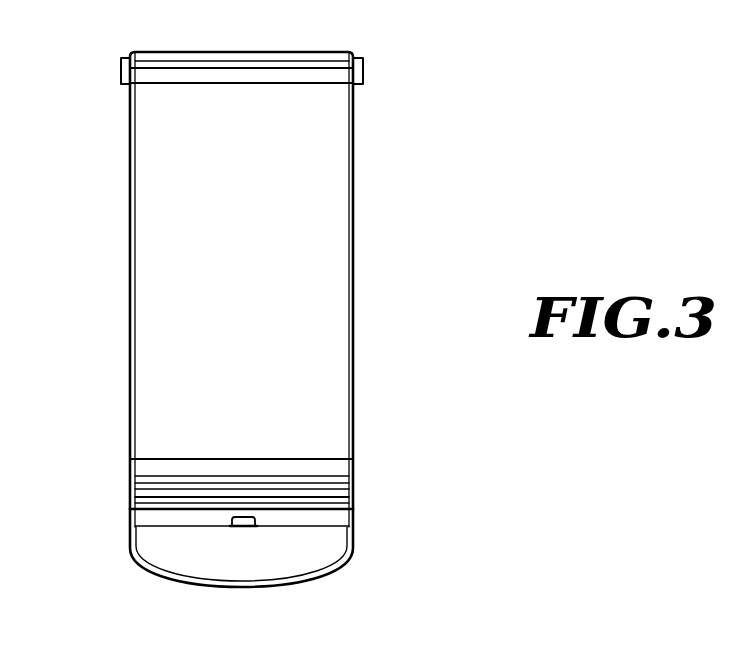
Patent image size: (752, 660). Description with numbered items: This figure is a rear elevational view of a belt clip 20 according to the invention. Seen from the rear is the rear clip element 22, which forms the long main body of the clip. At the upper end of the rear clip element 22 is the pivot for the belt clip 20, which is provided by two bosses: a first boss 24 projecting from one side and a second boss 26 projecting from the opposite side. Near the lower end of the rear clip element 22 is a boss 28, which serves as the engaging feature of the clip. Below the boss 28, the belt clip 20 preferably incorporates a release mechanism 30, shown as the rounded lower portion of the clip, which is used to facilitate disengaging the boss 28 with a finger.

The belt clip 20 is at (734, 264).
The rear clip element 22 is at (153, 327).
The first boss 24 is at (122, 71).
The second boss 26 is at (363, 70).
The boss 28 is at (243, 518).
The release mechanism 30 is at (200, 557).